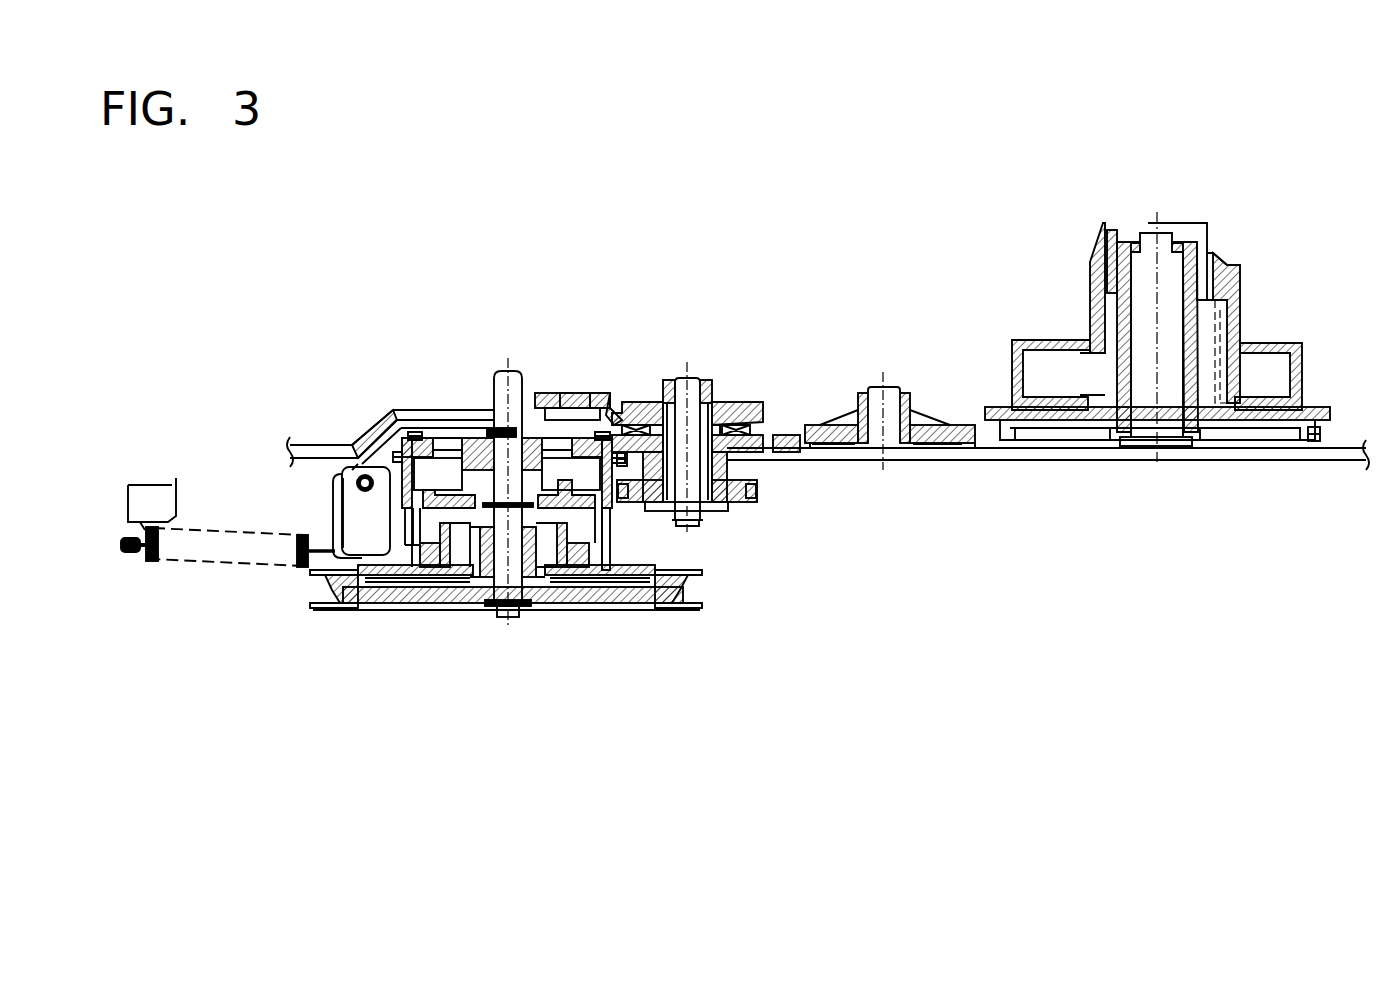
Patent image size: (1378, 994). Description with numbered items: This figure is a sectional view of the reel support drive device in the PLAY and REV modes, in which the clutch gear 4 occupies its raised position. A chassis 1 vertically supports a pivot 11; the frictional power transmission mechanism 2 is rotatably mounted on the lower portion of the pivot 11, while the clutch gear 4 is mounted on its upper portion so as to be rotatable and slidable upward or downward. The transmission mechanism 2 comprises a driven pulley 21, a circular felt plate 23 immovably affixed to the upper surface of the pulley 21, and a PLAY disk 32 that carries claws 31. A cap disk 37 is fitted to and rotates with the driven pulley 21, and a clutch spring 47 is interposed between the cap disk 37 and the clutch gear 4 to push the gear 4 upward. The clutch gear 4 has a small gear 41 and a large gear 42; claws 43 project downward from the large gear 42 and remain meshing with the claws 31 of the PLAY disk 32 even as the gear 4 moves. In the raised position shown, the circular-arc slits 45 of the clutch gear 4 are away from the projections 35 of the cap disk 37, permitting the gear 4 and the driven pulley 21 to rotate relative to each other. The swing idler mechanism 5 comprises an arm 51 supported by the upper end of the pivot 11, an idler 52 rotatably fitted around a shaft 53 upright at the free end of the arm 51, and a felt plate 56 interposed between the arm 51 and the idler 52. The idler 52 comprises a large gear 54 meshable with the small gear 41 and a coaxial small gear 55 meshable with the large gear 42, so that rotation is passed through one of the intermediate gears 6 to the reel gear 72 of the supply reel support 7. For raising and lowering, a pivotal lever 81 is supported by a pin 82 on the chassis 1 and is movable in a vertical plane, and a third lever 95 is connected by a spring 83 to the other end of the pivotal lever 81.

The chassis 1 is at (440, 408).
The frictional power transmission mechanism 2 is at (772, 575).
The clutch gear 4 is at (450, 440).
The swing idler mechanism 5 is at (763, 322).
The intermediate gear 6 is at (912, 402).
The supply reel support 7 is at (1163, 337).
The pivot 11 is at (508, 378).
The driven pulley 21 is at (640, 605).
The circular felt plate 23 is at (455, 590).
The claws 31 is at (397, 590).
The PLAY disk 32 is at (625, 590).
The projections 35 is at (575, 488).
The cap disk 37 is at (560, 579).
The small gear 41 is at (597, 359).
The large gear 42 is at (720, 405).
The claws 43 is at (395, 495).
The circular-arc slits 45 is at (575, 397).
The clutch spring 47 is at (562, 403).
The arm 51 is at (600, 402).
The idler 52 is at (754, 484).
The shaft 53 is at (693, 411).
The large gear 54 is at (758, 445).
The small gear 55 is at (740, 500).
The felt plate 56 is at (765, 424).
The reel gear 72 is at (1322, 435).
The pivotal lever 81 is at (380, 432).
The pin 82 is at (342, 500).
The spring 83 is at (261, 567).
The third lever 95 is at (130, 485).